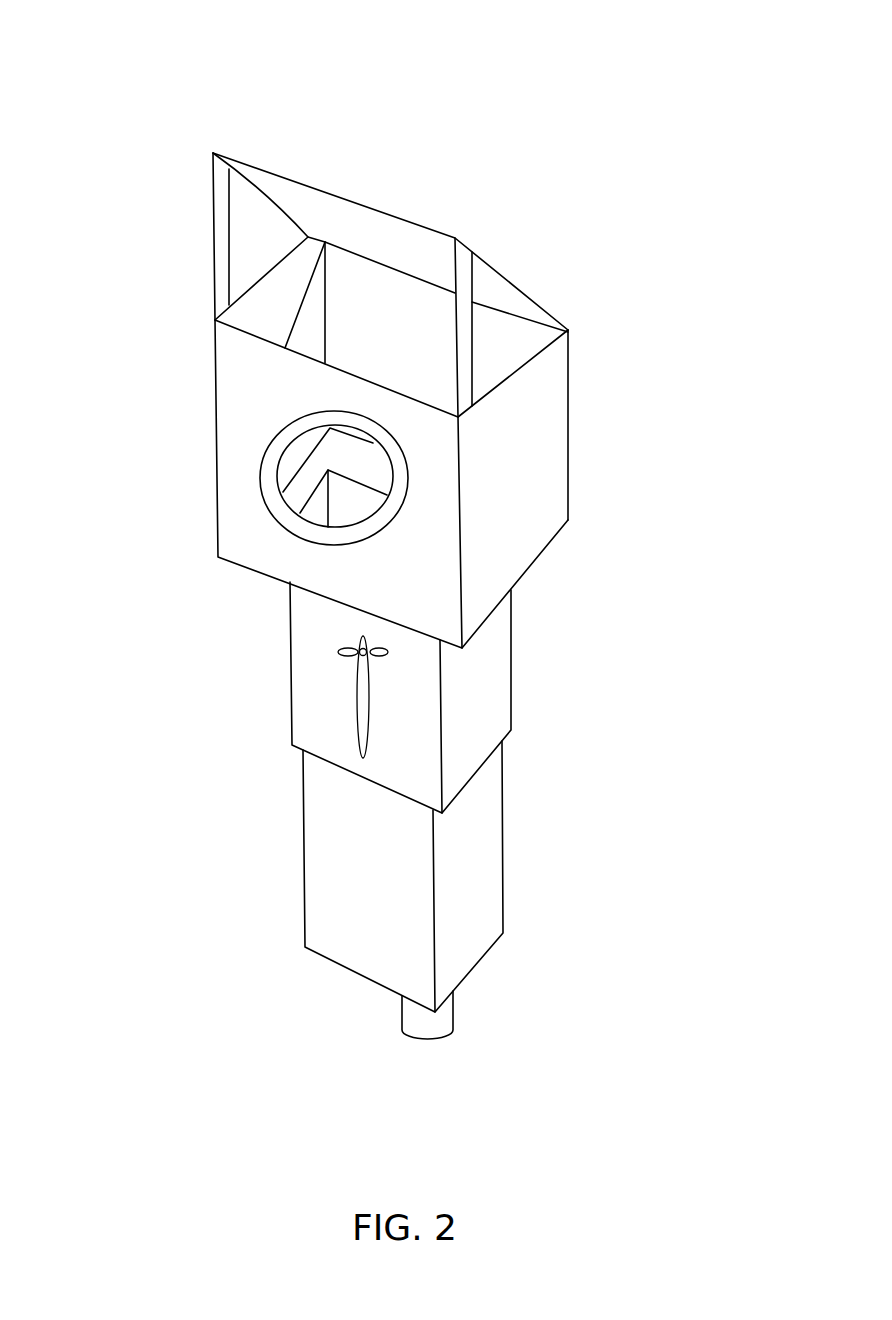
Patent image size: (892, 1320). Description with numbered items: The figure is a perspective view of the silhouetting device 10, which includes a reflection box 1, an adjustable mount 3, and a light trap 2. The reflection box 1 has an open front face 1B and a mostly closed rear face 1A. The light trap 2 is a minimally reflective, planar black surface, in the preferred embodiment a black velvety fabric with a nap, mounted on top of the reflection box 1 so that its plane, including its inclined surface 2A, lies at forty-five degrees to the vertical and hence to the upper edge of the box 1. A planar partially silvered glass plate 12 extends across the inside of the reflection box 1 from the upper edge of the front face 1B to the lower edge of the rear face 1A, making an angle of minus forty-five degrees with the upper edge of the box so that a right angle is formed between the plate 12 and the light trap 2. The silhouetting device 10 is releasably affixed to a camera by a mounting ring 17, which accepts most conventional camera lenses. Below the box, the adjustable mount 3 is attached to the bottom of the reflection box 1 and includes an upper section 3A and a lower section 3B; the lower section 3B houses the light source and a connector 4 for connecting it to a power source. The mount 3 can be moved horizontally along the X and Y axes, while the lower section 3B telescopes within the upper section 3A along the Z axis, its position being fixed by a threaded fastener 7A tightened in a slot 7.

The silhouetting device 10 is at (318, 140).
The reflection box 1 is at (392, 484).
The rear face 1A is at (232, 355).
The front face 1B is at (569, 377).
The light trap 2 is at (390, 328).
The inclined top surface of roof 2A is at (385, 230).
The adjustable mount 3 is at (350, 797).
The upper section 3A is at (497, 640).
The lower section 3B is at (475, 835).
The connector 4 is at (442, 1018).
The slot 7 is at (467, 697).
The threaded fastener 7A is at (370, 652).
The partially silvered glass plate 12 is at (490, 357).
The mounting ring 17 is at (398, 490).